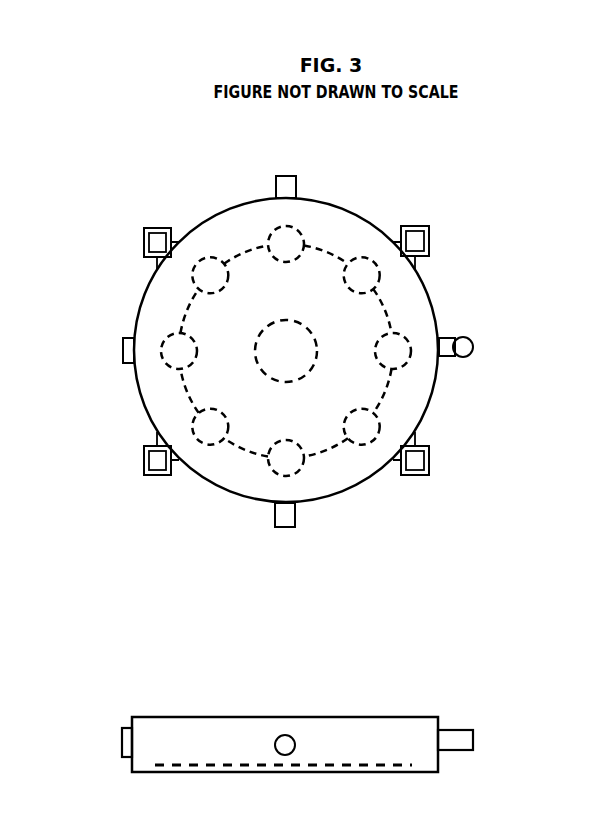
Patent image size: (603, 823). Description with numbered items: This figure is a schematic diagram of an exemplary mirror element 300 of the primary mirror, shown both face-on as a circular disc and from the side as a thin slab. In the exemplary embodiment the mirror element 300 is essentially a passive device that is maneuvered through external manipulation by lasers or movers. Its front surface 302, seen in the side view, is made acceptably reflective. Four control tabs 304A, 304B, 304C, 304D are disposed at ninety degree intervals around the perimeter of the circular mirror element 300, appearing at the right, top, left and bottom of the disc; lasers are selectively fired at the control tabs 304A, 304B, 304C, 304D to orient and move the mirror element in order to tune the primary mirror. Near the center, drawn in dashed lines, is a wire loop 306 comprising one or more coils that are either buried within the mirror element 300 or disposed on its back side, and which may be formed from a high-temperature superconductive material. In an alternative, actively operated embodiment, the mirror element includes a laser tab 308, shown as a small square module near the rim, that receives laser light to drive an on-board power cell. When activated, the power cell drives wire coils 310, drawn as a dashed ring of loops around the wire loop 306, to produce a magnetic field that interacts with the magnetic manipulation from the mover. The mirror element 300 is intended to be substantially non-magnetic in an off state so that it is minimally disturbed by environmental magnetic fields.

The mirror element 300 is at (484, 178).
The front surface 302 is at (383, 714).
The control tab 304A is at (479, 347).
The control tab 304B is at (285, 175).
The control tab 304C is at (122, 340).
The control tab 304D is at (282, 530).
The wire loop 306 is at (313, 321).
The laser tab 308 is at (437, 232).
The wire coils 310 is at (229, 236).